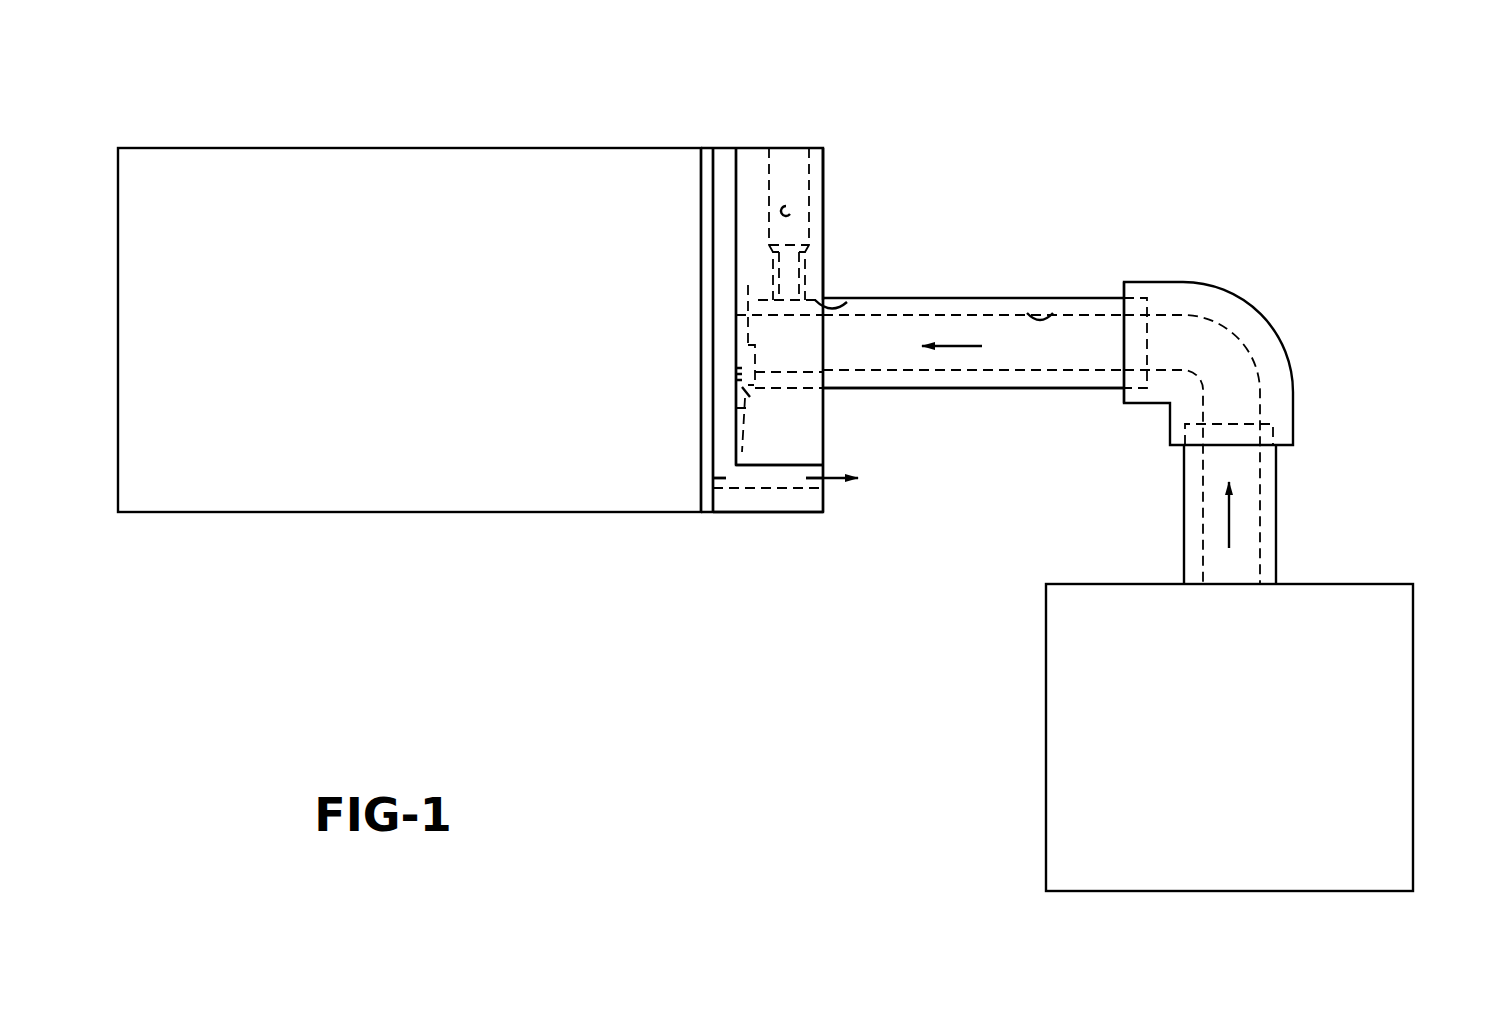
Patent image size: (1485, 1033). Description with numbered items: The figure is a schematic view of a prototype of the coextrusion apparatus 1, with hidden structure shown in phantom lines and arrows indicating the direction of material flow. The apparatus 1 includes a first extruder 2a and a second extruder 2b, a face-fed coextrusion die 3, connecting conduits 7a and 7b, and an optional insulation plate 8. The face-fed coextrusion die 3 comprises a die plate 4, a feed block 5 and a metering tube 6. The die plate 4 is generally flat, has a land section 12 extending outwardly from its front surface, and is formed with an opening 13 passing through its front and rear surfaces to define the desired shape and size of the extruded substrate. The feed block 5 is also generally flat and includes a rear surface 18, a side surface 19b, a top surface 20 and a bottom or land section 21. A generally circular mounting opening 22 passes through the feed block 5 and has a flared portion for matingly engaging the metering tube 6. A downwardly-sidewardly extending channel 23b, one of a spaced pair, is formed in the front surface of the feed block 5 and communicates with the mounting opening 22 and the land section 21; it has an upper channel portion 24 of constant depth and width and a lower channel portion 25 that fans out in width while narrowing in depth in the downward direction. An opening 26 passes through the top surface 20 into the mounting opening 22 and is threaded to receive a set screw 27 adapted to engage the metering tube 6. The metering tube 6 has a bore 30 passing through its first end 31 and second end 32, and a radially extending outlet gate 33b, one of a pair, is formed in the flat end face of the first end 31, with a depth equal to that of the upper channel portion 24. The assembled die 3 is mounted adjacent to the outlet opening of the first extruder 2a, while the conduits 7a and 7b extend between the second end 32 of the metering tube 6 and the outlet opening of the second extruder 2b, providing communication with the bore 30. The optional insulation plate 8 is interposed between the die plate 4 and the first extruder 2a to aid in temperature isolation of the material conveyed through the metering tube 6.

The coextrusion apparatus 1 is at (768, 692).
The first extruder 2a is at (404, 146).
The second extruder 2b is at (1347, 581).
The face-fed coextrusion die 3 is at (809, 531).
The die plate 4 is at (727, 146).
The feed block 5 is at (825, 146).
The metering tube 6 is at (983, 297).
The connecting conduit 7a is at (1242, 301).
The connecting conduit 7b is at (1279, 480).
The optional insulation plate 8 is at (705, 516).
The land section 12 is at (770, 513).
The opening 13 is at (700, 477).
The rear surface 18 is at (825, 192).
The side surface 19b is at (820, 168).
The top surface 20 is at (758, 146).
The land section 21 is at (800, 453).
The mounting opening 22 is at (850, 300).
The channel 23b is at (760, 427).
The upper channel portion 24 is at (755, 390).
The lower channel portion 25 is at (745, 460).
The opening 26 is at (793, 213).
The set screw 27 is at (800, 266).
The bore 30 is at (1055, 298).
The first end 31 is at (755, 295).
The second end 32 is at (1100, 298).
The outlet gate 33b is at (740, 344).